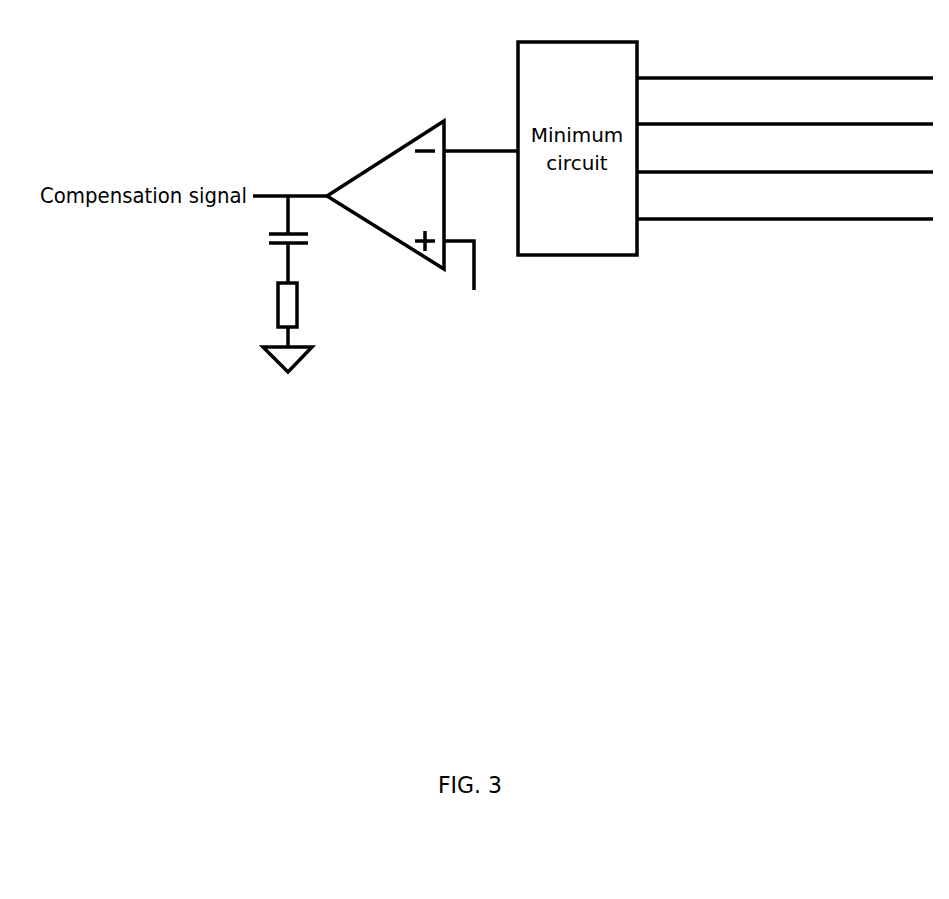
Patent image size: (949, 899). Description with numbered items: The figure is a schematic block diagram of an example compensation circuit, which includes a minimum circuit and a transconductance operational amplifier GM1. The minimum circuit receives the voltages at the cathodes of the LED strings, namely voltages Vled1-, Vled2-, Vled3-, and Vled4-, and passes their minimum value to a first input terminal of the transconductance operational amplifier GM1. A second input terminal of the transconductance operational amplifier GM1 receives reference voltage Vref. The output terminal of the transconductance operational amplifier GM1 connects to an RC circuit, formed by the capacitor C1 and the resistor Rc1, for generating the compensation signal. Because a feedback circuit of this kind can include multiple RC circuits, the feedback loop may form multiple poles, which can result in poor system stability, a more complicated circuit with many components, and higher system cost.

The transconductance operational amplifier GM1 is at (385, 195).
The capacitor of the RC circuit C1 is at (309, 239).
The resistor of the RC circuit Rc1 is at (317, 315).
The reference voltage Vref is at (469, 280).
The cathode voltage of first LED string Vled1- is at (785, 63).
The cathode voltage of second LED string Vled2- is at (785, 110).
The cathode voltage of third LED string Vled3- is at (785, 158).
The cathode voltage of fourth LED string Vled4- is at (785, 205).